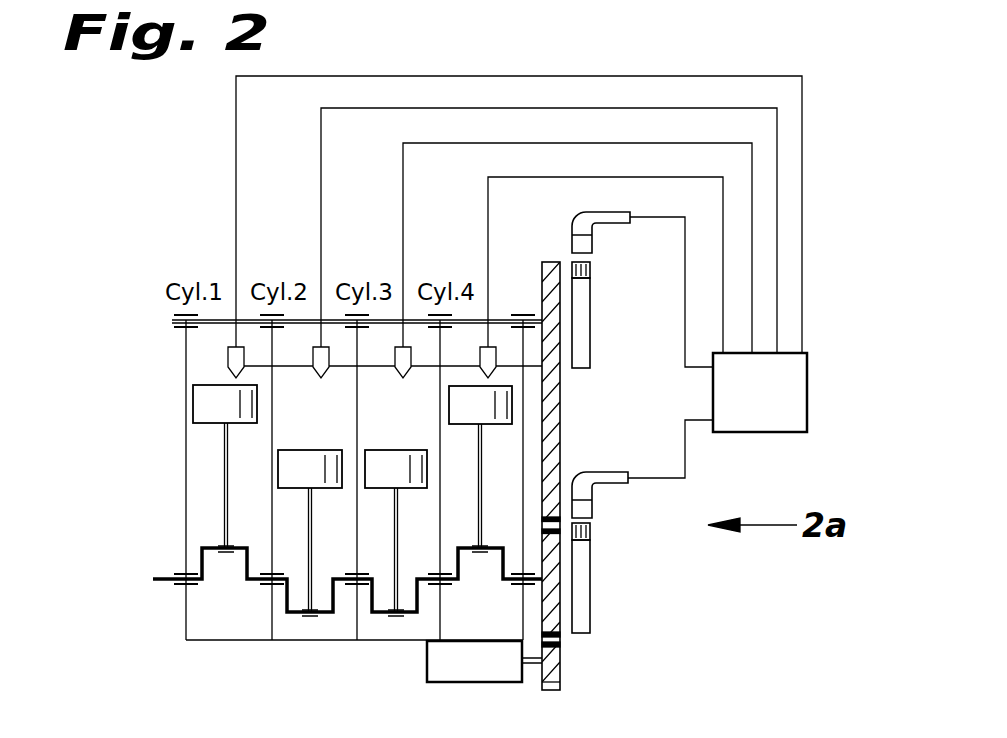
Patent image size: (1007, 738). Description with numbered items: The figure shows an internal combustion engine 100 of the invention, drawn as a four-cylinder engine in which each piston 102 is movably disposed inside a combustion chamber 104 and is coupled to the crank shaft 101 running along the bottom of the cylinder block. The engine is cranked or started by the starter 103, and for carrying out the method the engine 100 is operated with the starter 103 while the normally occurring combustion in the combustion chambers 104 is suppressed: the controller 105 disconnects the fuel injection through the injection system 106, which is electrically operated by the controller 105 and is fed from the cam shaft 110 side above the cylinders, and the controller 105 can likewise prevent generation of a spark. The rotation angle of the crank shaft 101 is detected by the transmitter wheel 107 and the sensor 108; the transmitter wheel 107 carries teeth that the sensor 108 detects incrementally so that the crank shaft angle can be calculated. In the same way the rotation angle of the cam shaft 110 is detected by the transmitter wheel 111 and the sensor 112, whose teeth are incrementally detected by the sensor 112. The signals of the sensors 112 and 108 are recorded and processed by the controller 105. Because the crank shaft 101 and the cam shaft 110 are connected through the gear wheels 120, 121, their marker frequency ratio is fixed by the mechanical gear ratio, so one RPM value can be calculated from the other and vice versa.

The internal combustion engine 100 is at (162, 468).
The crank shaft 101 is at (167, 583).
The piston 102 is at (210, 410).
The starter 103 is at (456, 672).
The combustion chamber 104 is at (200, 522).
The controller 105 is at (741, 407).
The injection system 106 is at (227, 360).
The transmitter wheel 107 is at (582, 605).
The sensor 108 is at (608, 477).
The cam shaft 110 is at (217, 324).
The transmitter wheel 111 is at (583, 322).
The sensor 112 is at (608, 220).
The gear wheel 120 is at (552, 407).
The gear wheel 121 is at (553, 622).